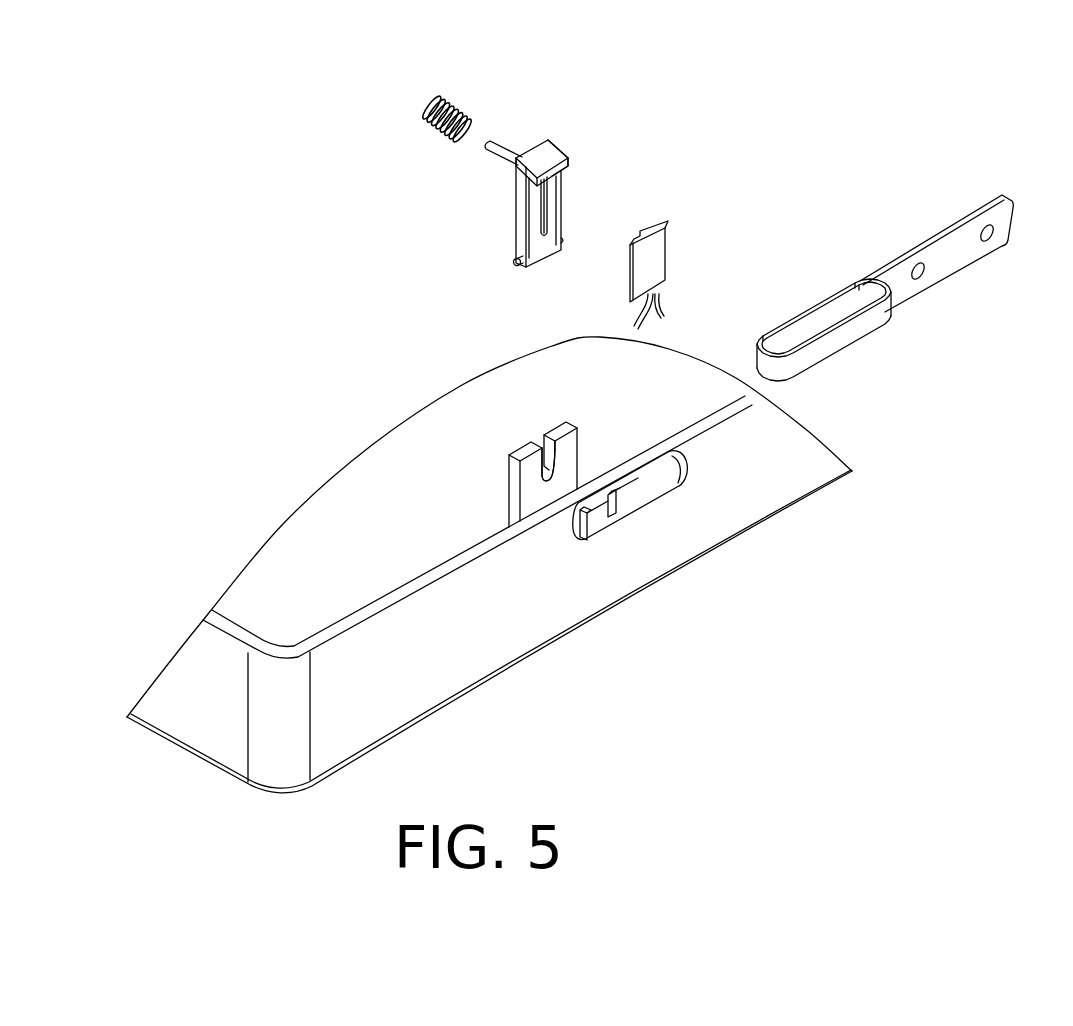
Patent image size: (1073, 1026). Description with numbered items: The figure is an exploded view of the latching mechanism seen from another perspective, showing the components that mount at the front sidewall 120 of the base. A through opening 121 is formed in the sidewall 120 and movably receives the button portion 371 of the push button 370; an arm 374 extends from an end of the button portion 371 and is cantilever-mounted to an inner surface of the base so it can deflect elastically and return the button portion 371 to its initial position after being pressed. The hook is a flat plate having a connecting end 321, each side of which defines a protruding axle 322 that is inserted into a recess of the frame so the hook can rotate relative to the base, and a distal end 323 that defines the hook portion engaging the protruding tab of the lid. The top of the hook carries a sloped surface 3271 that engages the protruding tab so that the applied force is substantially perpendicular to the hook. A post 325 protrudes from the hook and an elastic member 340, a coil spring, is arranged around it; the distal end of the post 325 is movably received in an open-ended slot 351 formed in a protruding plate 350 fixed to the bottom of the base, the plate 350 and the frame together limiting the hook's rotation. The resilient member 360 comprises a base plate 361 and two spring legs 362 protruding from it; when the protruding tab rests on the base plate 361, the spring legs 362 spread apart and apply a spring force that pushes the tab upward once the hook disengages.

The front sidewall 120 is at (553, 588).
The through opening 121 is at (655, 475).
The connecting end 321 is at (508, 185).
The protruding axle 322 is at (538, 262).
The distal end 323 is at (532, 155).
The sloped surface 3271 is at (557, 157).
The post 325 is at (489, 156).
The elastic member 340 is at (427, 118).
The protruding plate 350 is at (519, 443).
The open-ended slot 351 is at (538, 436).
The resilient member 360 is at (739, 265).
The base plate 361 is at (655, 258).
The spring leg 362 is at (660, 305).
The push button 370 is at (900, 258).
The button portion 371 is at (860, 327).
The arm 374 is at (937, 262).